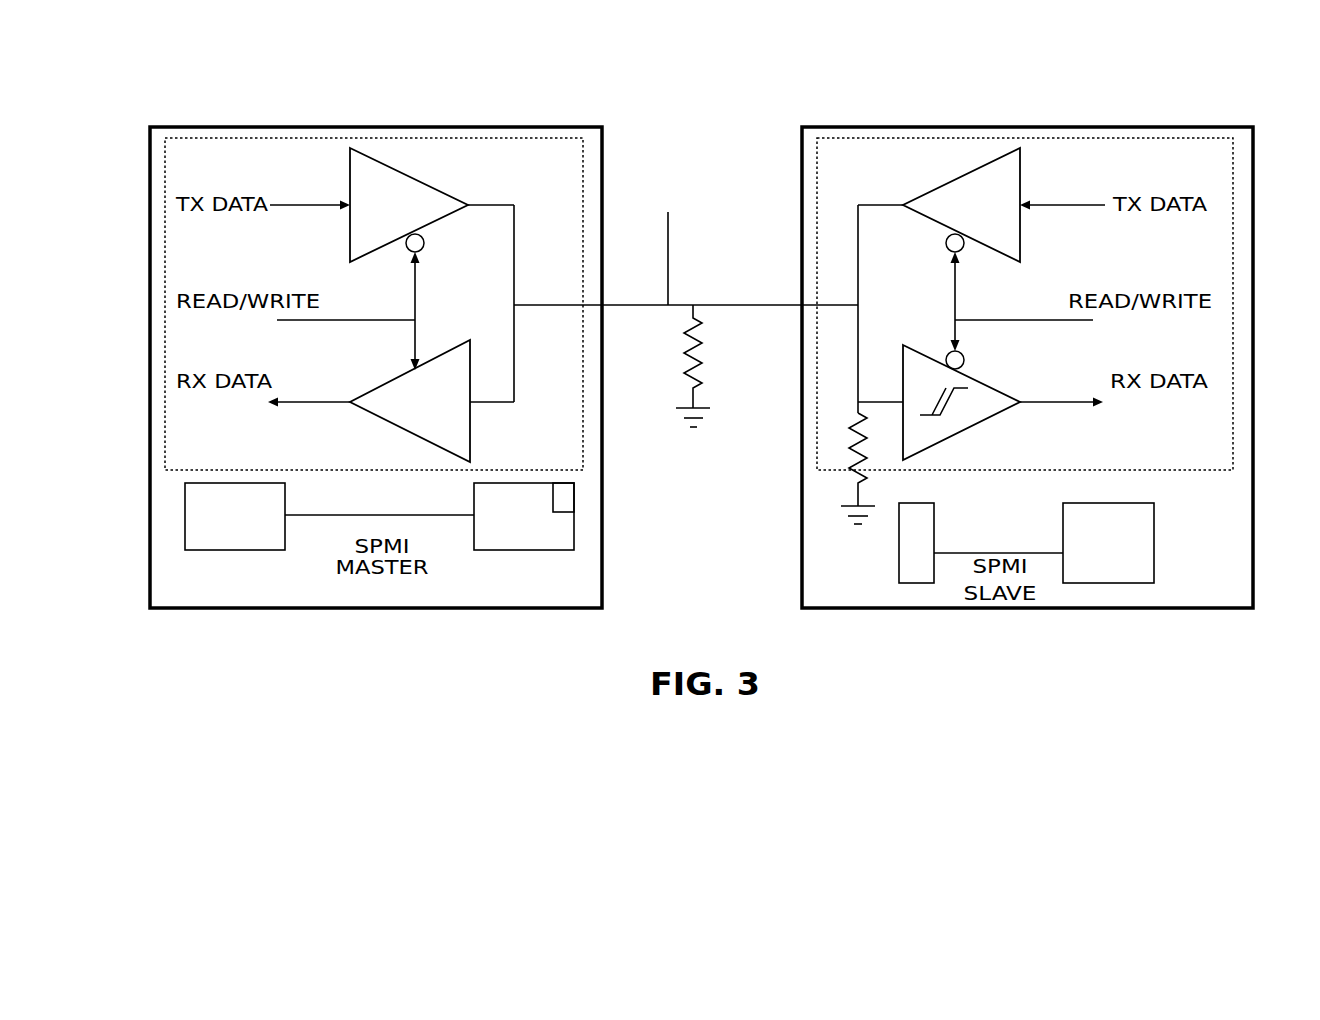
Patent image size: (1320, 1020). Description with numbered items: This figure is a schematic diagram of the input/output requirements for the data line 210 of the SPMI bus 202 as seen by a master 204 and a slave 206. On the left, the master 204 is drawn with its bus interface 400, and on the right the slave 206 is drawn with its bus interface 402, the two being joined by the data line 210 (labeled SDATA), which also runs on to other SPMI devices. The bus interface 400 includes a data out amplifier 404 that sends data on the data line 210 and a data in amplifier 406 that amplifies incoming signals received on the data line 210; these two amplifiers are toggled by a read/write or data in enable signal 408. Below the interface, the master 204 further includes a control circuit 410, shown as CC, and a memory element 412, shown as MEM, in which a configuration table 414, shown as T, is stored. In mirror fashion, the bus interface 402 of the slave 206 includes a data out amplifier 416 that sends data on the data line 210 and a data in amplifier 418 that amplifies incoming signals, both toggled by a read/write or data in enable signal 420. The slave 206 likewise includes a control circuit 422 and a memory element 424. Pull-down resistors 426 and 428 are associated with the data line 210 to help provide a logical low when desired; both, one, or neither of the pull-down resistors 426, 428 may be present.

The SPMI bus 202 is at (706, 110).
The master 204 is at (385, 127).
The slave 206 is at (1038, 127).
The data line 210 is at (621, 305).
The bus interface 400 is at (545, 138).
The bus interface 402 is at (1205, 138).
The data out amplifier 404 is at (441, 192).
The data in amplifier 406 is at (463, 340).
The read/write or data in enable signal 408 is at (318, 321).
The control circuit 410 is at (240, 551).
The memory element 412 is at (574, 530).
The configuration table 414 is at (574, 491).
The data out amplifier 416 is at (938, 187).
The data in amplifier 418 is at (993, 416).
The read/write or data in enable signal 420 is at (1025, 321).
The control circuit 422 is at (1111, 584).
The memory element 424 is at (916, 584).
The pull-down resistor 426 is at (703, 375).
The pull-down resistor 428 is at (852, 478).